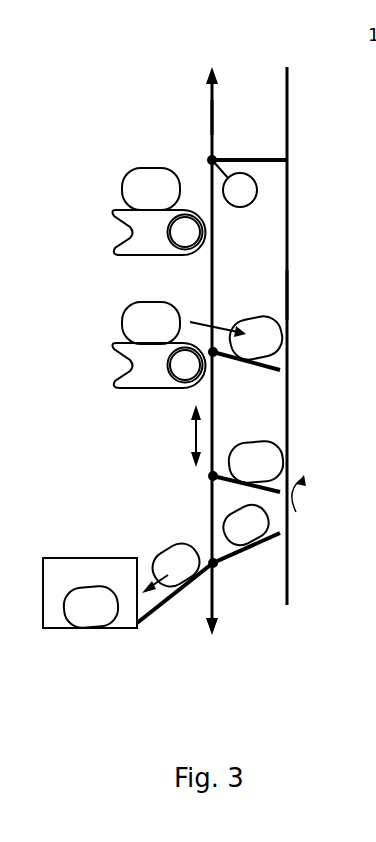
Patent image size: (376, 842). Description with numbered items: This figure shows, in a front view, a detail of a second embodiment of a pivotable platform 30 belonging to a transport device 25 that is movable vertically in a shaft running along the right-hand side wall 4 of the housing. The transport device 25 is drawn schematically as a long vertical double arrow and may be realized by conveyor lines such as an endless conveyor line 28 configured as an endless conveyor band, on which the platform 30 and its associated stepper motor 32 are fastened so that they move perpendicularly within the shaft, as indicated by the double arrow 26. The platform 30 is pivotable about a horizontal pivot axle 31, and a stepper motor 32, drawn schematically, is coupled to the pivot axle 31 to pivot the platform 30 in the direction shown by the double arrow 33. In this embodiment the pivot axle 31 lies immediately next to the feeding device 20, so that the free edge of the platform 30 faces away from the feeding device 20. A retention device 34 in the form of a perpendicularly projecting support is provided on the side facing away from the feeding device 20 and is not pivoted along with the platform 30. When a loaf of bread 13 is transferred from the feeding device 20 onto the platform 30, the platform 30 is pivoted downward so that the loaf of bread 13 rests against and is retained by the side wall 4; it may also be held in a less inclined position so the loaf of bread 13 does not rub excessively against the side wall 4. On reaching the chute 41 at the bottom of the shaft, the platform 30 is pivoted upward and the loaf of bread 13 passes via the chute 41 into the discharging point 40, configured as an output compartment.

The right-hand side wall 4 is at (288, 267).
The loaf of bread 13 is at (142, 178).
The feeding device 20 is at (140, 246).
The transport device 25 is at (203, 91).
The double arrow 26 is at (194, 437).
The endless conveyor line 28 is at (210, 120).
The platform 30 is at (240, 157).
The pivot axle 31 is at (211, 158).
The stepper motor 32 is at (256, 195).
The double arrow 33 is at (307, 500).
The retention device 34 is at (288, 290).
The discharging point 40 is at (65, 575).
The chute 41 is at (158, 605).